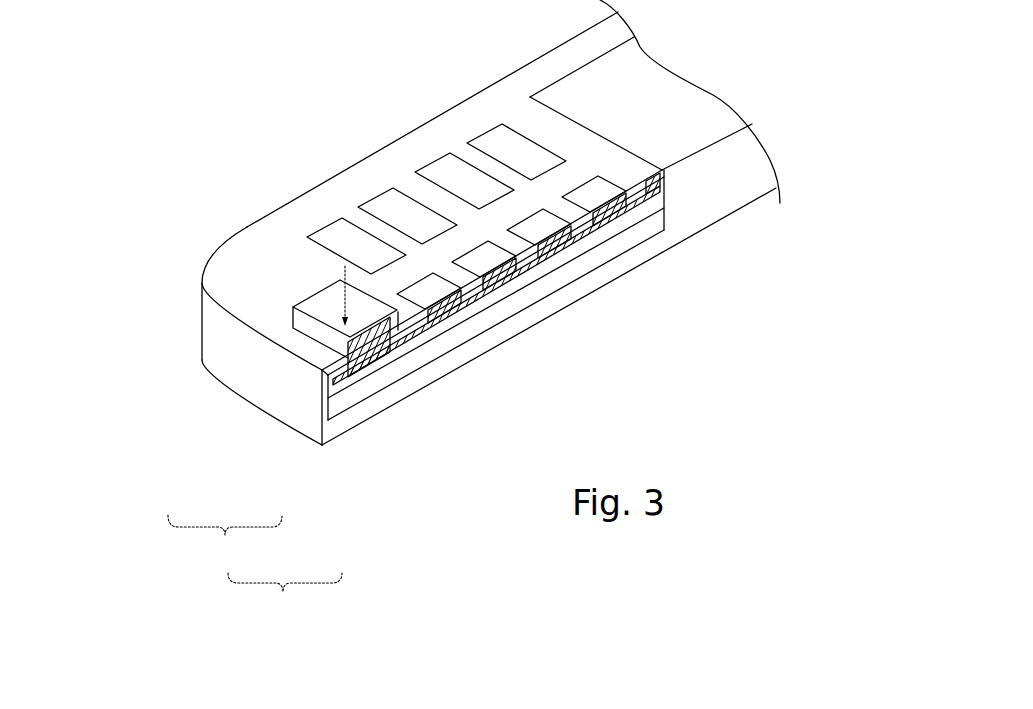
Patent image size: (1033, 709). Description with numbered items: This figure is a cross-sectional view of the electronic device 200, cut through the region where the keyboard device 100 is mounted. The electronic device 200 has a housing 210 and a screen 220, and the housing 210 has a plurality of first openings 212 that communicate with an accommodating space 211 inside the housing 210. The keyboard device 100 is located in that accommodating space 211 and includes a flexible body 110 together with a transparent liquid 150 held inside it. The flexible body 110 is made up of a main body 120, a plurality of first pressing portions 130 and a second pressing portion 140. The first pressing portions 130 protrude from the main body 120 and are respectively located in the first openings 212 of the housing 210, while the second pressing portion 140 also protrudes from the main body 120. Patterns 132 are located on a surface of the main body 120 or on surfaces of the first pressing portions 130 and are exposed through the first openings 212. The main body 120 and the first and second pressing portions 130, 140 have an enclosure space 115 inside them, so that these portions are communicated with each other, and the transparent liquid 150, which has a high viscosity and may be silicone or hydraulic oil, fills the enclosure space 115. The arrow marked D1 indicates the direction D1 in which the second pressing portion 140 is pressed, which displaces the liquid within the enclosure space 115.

The keyboard device 100 is at (285, 599).
The flexible body 110 is at (225, 544).
The enclosure space 115 is at (466, 320).
The main body 120 is at (352, 377).
The first pressing portions 130 is at (322, 246).
The patterns 132 is at (413, 212).
The second pressing portion 140 is at (328, 330).
The transparent liquid 150 is at (384, 355).
The electronic device 200 is at (187, 97).
The housing 210 is at (257, 237).
The accommodating space 211 is at (612, 253).
The first openings 212 is at (371, 190).
The screen 220 is at (667, 85).
The direction D1 is at (343, 290).